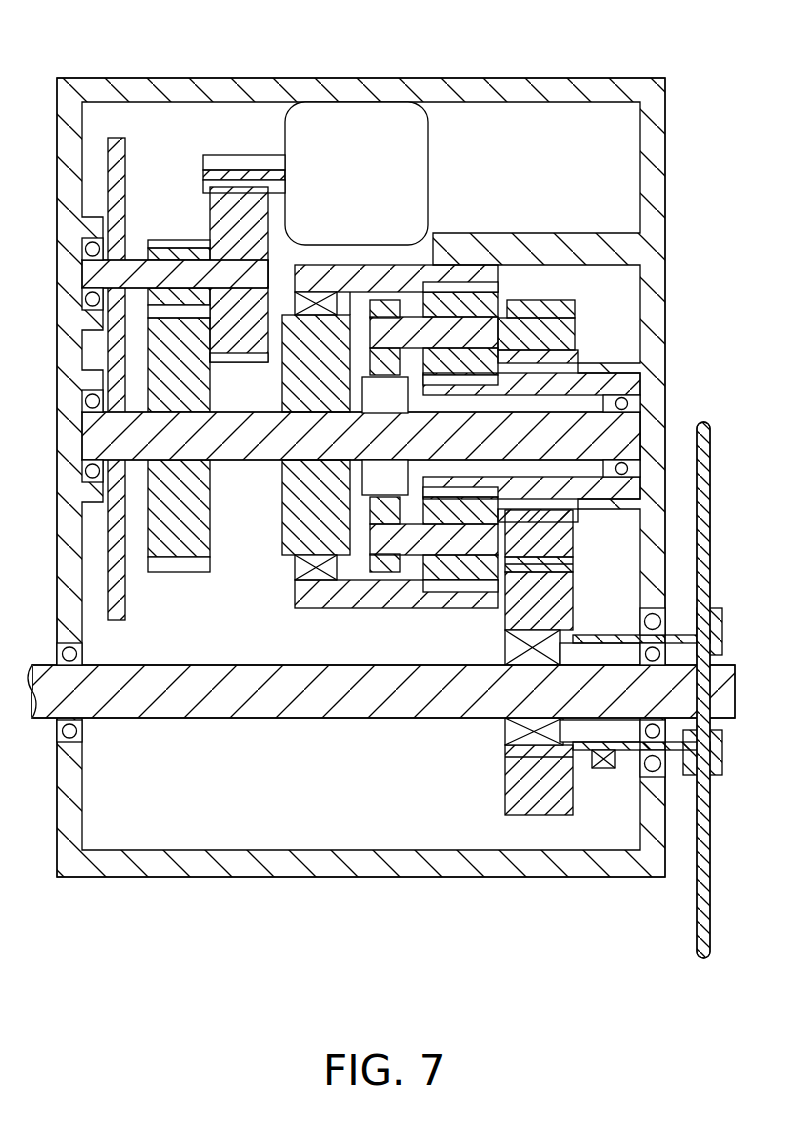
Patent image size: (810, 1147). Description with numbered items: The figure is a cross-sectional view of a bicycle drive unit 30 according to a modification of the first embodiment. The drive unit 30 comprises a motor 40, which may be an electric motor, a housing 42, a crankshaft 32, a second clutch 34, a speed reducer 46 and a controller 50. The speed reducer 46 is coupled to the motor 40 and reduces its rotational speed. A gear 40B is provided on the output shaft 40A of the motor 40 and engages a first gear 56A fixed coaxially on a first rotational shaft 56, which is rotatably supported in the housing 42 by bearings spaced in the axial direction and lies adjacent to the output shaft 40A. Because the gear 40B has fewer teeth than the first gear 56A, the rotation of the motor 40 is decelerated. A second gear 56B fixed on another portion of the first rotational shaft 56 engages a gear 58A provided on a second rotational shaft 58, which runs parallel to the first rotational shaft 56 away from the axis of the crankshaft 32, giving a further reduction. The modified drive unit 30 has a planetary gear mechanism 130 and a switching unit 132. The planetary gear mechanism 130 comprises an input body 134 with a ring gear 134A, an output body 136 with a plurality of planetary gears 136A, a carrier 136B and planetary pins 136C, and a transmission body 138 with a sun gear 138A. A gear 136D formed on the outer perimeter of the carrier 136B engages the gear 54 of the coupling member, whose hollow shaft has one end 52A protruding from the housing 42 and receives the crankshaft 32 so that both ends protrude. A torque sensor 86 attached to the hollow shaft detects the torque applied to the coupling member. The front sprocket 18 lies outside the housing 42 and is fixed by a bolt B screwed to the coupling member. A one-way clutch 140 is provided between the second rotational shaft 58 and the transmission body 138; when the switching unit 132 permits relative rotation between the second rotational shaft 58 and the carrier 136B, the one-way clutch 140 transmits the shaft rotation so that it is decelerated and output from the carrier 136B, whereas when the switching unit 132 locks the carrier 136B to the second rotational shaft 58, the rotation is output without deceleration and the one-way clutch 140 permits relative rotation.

The drive unit 30 is at (704, 50).
The housing 42 is at (665, 148).
The motor 40 is at (428, 140).
The output shaft 40A is at (258, 172).
The gear 40B is at (216, 144).
The controller 50 is at (125, 152).
The speed reducer 46 is at (197, 208).
The first rotational shaft 56 is at (82, 276).
The first gear 56A is at (247, 363).
The second gear 56B is at (160, 242).
The second rotational shaft 58 is at (233, 462).
The gear 58A is at (165, 573).
The planetary gear mechanism 130 is at (571, 286).
The switching unit 132 is at (358, 396).
The input body 134 is at (320, 609).
The ring gear 134A is at (433, 594).
The output body 136 is at (573, 535).
The planetary gears 136A is at (492, 290).
The carrier 136B is at (575, 310).
The planetary pins 136C is at (574, 341).
The gear 136D is at (573, 565).
The transmission body 138 is at (476, 392).
The sun gear 138A is at (418, 482).
The one-way clutch 140 is at (284, 574).
The second clutch 34 is at (505, 646).
The gear 54 is at (573, 605).
The one end 52A is at (673, 637).
The bolt B is at (722, 618).
The crankshaft 32 is at (728, 720).
The torque sensor 86 is at (604, 770).
The front sprocket 18 is at (710, 465).